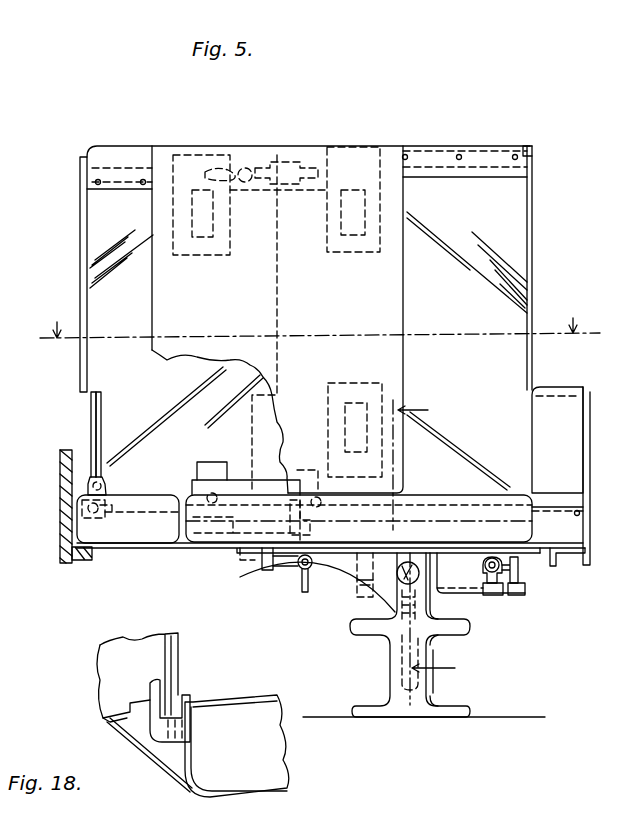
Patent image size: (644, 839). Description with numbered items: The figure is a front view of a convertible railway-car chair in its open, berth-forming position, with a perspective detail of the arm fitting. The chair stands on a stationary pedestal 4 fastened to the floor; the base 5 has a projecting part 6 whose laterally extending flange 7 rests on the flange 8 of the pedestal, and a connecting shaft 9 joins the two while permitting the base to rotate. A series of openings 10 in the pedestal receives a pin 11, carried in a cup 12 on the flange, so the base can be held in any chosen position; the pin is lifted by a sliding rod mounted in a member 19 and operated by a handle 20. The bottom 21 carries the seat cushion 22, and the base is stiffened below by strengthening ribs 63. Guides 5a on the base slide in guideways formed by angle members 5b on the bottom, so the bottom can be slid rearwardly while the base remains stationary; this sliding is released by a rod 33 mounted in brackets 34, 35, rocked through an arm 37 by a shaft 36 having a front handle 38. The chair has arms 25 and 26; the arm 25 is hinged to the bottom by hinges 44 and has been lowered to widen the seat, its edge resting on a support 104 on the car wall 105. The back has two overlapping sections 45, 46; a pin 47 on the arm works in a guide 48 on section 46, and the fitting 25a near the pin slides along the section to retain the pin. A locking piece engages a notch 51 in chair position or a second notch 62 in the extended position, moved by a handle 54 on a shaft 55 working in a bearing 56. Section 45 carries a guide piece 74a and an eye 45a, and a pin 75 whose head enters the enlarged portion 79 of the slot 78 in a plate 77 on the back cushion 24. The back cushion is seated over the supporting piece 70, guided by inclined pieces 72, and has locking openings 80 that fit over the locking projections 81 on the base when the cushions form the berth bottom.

In FIG. 5, the pedestal 4 is at (431, 683).
In FIG. 5, the base 5 is at (437, 541).
In FIG. 5, the guides 5a is at (428, 600).
In FIG. 5, the angle members 5b is at (560, 553).
In FIG. 5, the projecting part 6 is at (366, 600).
In FIG. 5, the laterally extending flange 7 is at (438, 621).
In FIG. 5, the flange of the pedestal 8 is at (455, 634).
In FIG. 5, the connecting piece or shaft 9 is at (404, 677).
In FIG. 5, the openings 10 is at (437, 540).
In FIG. 5, the pin 11 is at (320, 333).
In FIG. 5, the cup 12 is at (398, 608).
In FIG. 5, the member 19 is at (303, 571).
In FIG. 5, the handle 20 is at (309, 589).
In FIG. 5, the bottom 21 is at (458, 541).
In FIG. 5, the seat cushion 22 is at (441, 498).
In FIG. 5, the back cushion 24 is at (404, 292).
In FIG. 5, the arm 25 is at (146, 546).
In FIG. 18, the arm 25 is at (270, 753).
In FIG. 18, the fitting 25a is at (177, 742).
In FIG. 5, the arm 26 is at (573, 420).
In FIG. 5, the rod 33 is at (471, 600).
In FIG. 5, the bracket 34 is at (362, 590).
In FIG. 5, the bracket 35 is at (515, 597).
In FIG. 5, the shaft 36 is at (520, 569).
In FIG. 5, the arm 37 is at (497, 598).
In FIG. 5, the handle 38 is at (515, 576).
In FIG. 5, the hinges 44 is at (240, 553).
In FIG. 5, the back section 45 is at (515, 213).
In FIG. 5, the eye 45a is at (534, 152).
In FIG. 5, the back section 46 is at (90, 218).
In FIG. 18, the back section 46 is at (108, 660).
In FIG. 5, the pin 47 is at (104, 489).
In FIG. 5, the guide 48 is at (101, 421).
In FIG. 5, the notch 51 is at (115, 512).
In FIG. 5, the handle 54 is at (300, 572).
In FIG. 5, the shaft 55 is at (275, 562).
In FIG. 5, the bearing 56 is at (262, 571).
In FIG. 5, the second notch 62 is at (298, 502).
In FIG. 5, the strengthening ribs 63 is at (396, 581).
In FIG. 5, the back cushion supporting piece 70 is at (241, 480).
In FIG. 5, the inclined guiding pieces 72 is at (203, 462).
In FIG. 5, the piece 74a is at (563, 510).
In FIG. 5, the pin 75 is at (245, 167).
In FIG. 5, the plate 77 is at (190, 158).
In FIG. 5, the slot 78 is at (222, 170).
In FIG. 5, the enlarged portion 79 is at (269, 162).
In FIG. 5, the locking openings 80 is at (204, 238).
In FIG. 5, the locking projections 81 is at (283, 556).
In FIG. 5, the support 104 is at (84, 563).
In FIG. 5, the wall 105 is at (66, 580).